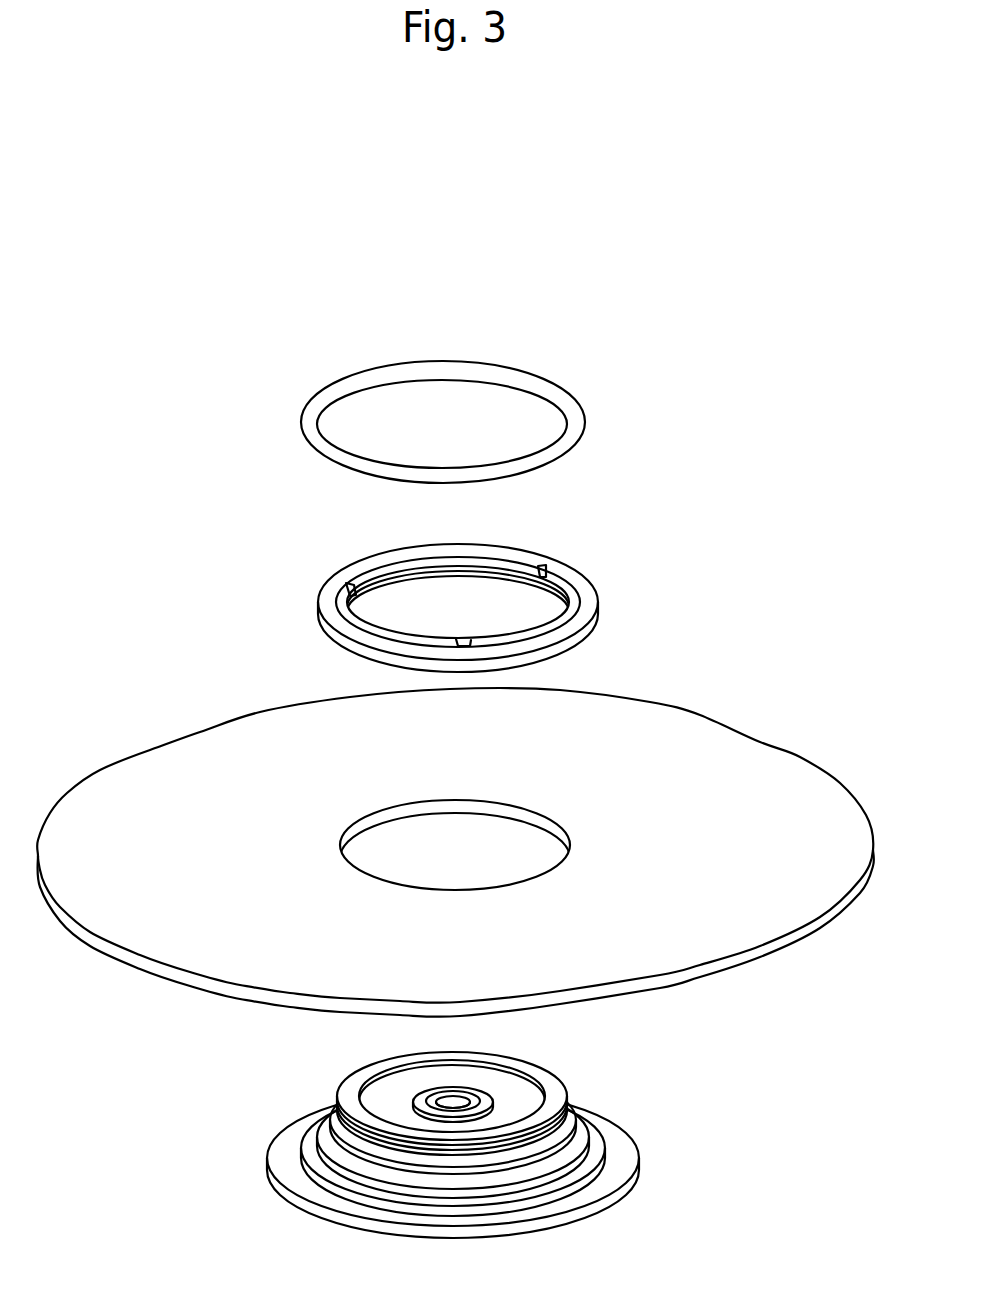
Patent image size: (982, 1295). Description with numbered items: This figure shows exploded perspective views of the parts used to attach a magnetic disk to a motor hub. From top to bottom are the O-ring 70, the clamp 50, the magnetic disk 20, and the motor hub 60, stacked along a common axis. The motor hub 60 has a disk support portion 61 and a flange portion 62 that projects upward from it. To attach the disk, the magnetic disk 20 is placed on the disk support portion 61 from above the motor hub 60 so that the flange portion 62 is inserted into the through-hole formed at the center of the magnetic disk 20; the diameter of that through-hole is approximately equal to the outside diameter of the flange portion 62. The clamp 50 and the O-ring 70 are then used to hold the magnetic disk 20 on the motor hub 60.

The O-ring 70 is at (546, 388).
The clamp 50 is at (582, 586).
The magnetic disk 20 is at (712, 752).
The motor hub 60 is at (564, 1145).
The disk support portion 61 is at (618, 1154).
The flange portion 62 is at (550, 1081).